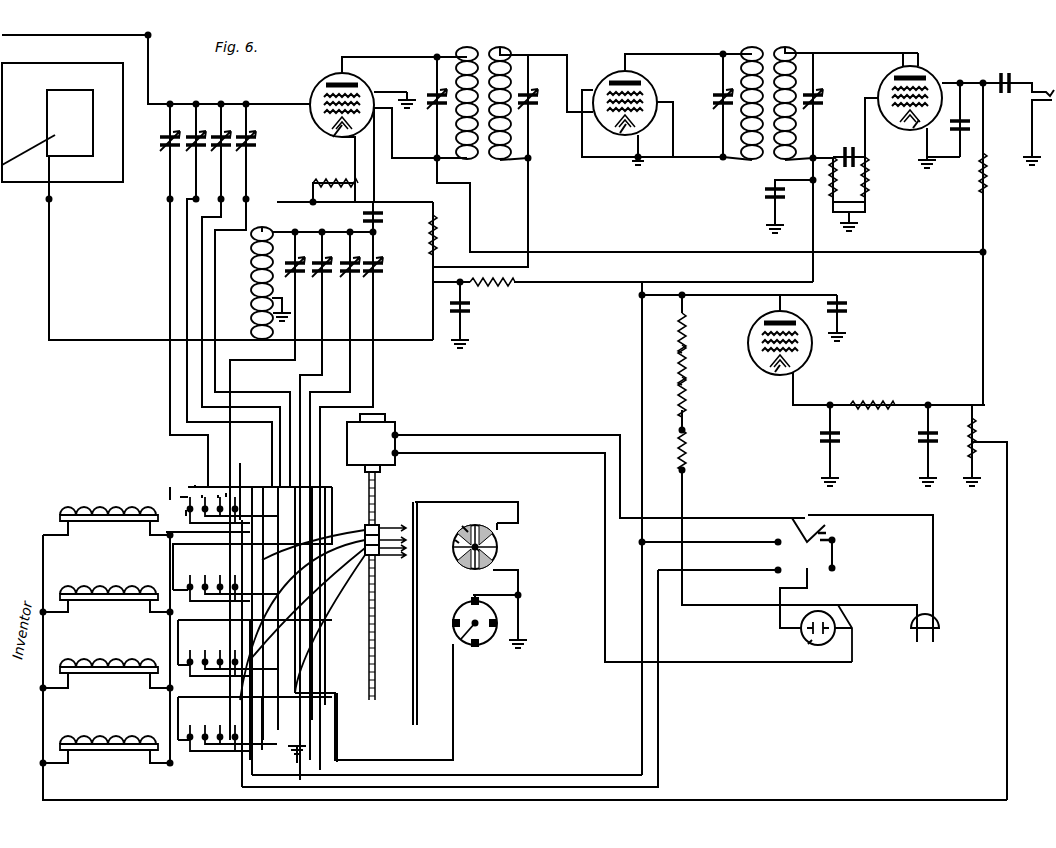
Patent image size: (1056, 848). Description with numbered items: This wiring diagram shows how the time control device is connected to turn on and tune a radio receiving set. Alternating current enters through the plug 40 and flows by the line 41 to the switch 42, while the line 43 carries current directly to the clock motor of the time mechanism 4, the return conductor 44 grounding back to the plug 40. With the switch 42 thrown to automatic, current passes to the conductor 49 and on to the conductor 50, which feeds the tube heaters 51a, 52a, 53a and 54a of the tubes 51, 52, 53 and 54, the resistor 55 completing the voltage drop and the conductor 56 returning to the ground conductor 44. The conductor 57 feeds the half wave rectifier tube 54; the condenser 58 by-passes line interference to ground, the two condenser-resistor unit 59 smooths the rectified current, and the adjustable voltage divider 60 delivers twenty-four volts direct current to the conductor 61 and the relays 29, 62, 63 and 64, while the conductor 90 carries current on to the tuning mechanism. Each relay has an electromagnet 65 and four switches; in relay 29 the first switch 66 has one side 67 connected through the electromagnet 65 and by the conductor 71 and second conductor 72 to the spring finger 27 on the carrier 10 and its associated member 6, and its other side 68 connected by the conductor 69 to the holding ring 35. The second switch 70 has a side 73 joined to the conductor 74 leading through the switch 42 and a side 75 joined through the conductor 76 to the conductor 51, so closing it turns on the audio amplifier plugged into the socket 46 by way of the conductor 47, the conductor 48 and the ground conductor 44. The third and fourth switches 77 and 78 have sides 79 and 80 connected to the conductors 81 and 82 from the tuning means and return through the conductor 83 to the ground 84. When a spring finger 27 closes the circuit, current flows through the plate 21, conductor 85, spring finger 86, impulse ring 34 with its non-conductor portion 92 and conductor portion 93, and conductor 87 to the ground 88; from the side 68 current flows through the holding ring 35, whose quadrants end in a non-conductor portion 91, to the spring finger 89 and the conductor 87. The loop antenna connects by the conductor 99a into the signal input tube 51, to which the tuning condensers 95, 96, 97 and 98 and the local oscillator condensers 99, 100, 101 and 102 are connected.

The loop antenna 99a is at (148, 51).
The condenser 95 is at (173, 124).
The condenser 96 is at (198, 124).
The condenser 97 is at (223, 134).
The condenser 98 is at (248, 140).
The signal input tube 51 is at (358, 77).
The tube heater 51a is at (332, 137).
The tube 52 is at (608, 68).
The tube heater 52a is at (628, 138).
The tube 53 is at (928, 72).
The tube heater 53a is at (916, 130).
The condenser 99 is at (293, 262).
The condenser 100 is at (319, 262).
The condenser 101 is at (347, 262).
The condenser 102 is at (380, 264).
The ground 84 is at (470, 342).
The conductor 57 is at (762, 252).
The condenser 58 is at (847, 308).
The conductor 50 is at (642, 351).
The half wave rectifier tube 54 is at (812, 348).
The tube heater 54a is at (778, 369).
The condenser-resistor unit 59 is at (876, 386).
The conductor 90 is at (985, 338).
The voltage divider 60 is at (977, 425).
The resistor 55 is at (686, 446).
The conductor 56 is at (684, 502).
The conductor 81 is at (172, 412).
The conductor 82 is at (230, 433).
The side of switch 80 is at (230, 463).
The side of switch 75 is at (194, 485).
The second switch 70 is at (202, 495).
The third switch 77 is at (218, 495).
The fourth switch 78 is at (226, 493).
The conductor 69 is at (266, 484).
The side of switch 68 is at (190, 497).
The first switch 66 is at (172, 500).
The side of switch 67 is at (186, 506).
The electromagnet 65 is at (134, 498).
The relay 29 is at (97, 494).
The side of switch 73 is at (166, 532).
The conductor 71 is at (172, 544).
The conductor 74 is at (230, 530).
The side of switch 79 is at (178, 586).
The relay 62 is at (119, 569).
The relay 63 is at (119, 650).
The relay 64 is at (119, 727).
The conductor 61 is at (44, 710).
The conductor 83 is at (251, 654).
The conductor 76 is at (524, 775).
The time mechanism 4 is at (393, 429).
The carrier 10 is at (366, 500).
The spring finger 27 is at (386, 512).
The second conductor 72 is at (332, 524).
The plate 21 is at (412, 580).
The lead screw 6 is at (376, 608).
The line 43 is at (500, 434).
The return conductor 44 is at (508, 456).
The conductor 85 is at (470, 502).
The spring finger 86 is at (510, 514).
The conductor portion 93 is at (464, 528).
The non-conductor portion 92 is at (456, 537).
The impulse ring 34 is at (496, 540).
The conductor 87 is at (518, 580).
The non-conductor portion 91 is at (473, 600).
The spring finger 89 is at (522, 595).
The ground 88 is at (522, 648).
The holding ring 35 is at (487, 648).
The conductor 49 is at (777, 518).
The switch 42 is at (829, 532).
The conductor 47 is at (803, 582).
The conductor 48 is at (838, 618).
The socket 46 is at (811, 646).
The plug 40 is at (941, 624).
The line 41 is at (933, 536).